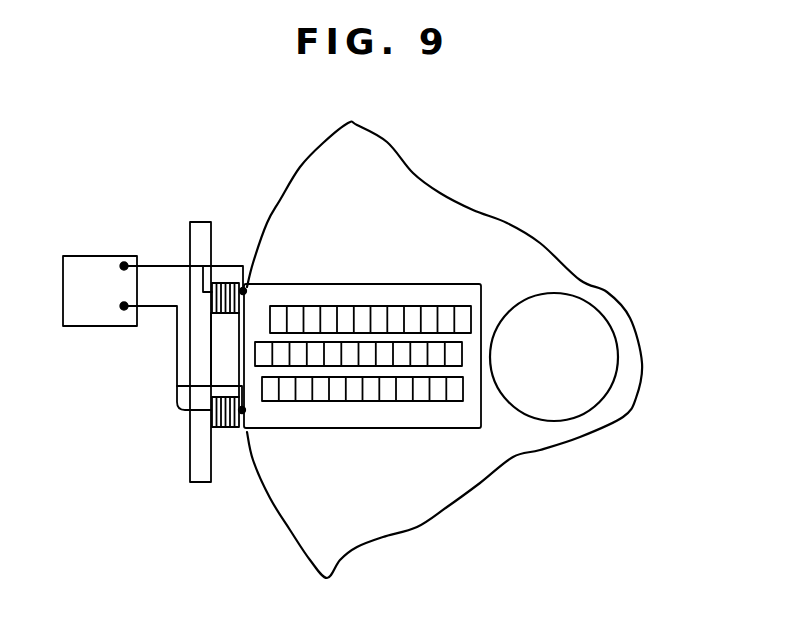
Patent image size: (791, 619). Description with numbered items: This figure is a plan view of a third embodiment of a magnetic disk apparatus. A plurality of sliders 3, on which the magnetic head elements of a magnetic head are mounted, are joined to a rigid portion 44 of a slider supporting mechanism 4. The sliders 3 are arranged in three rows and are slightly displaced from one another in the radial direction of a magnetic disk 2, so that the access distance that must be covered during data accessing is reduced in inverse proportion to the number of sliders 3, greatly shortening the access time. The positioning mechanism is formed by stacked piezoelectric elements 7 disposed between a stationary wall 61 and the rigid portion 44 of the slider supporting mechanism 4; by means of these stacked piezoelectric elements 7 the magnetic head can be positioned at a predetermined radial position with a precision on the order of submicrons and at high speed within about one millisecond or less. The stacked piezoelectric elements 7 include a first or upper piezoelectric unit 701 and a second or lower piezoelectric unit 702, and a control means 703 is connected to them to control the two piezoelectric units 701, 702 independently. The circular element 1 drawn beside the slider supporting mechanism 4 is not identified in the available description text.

The lens 1 is at (570, 330).
The magnetic disk 2 is at (375, 178).
The sliders 3 is at (423, 390).
The slider supporting mechanism 4 is at (368, 353).
The stacked piezoelectric elements 7 is at (234, 338).
The rigid portion 44 is at (283, 427).
The stationary wall 61 is at (203, 228).
The first or upper piezoelectric unit 701 is at (247, 286).
The second or lower piezoelectric unit 702 is at (225, 428).
The control means 703 is at (87, 267).